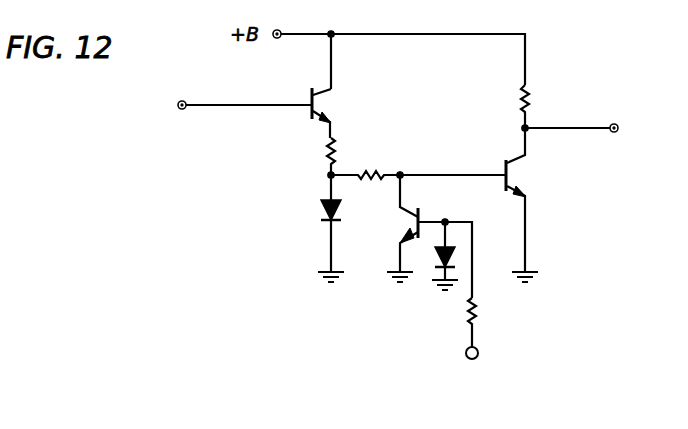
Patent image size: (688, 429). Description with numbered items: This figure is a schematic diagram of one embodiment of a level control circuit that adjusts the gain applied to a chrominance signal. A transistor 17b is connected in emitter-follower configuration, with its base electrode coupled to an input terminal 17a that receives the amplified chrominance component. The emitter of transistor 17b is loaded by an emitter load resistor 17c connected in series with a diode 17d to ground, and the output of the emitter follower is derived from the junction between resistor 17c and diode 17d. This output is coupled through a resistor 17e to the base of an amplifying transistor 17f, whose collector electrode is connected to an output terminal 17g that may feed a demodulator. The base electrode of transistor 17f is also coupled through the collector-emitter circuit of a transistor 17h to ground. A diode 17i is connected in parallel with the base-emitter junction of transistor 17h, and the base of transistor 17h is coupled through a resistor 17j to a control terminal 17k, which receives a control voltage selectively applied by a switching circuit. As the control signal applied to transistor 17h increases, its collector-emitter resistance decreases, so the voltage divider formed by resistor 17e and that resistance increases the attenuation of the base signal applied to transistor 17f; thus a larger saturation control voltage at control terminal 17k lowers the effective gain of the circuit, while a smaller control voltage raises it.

The input terminal 17a is at (181, 110).
The transistor 17b is at (312, 90).
The emitter load resistor 17c is at (327, 148).
The diode 17d is at (322, 212).
The resistor 17e is at (373, 165).
The amplifying transistor 17f is at (506, 161).
The output terminal 17g is at (613, 123).
The transistor 17h is at (419, 214).
The diode 17i is at (438, 255).
The resistor 17j is at (477, 312).
The control terminal 17k is at (472, 359).